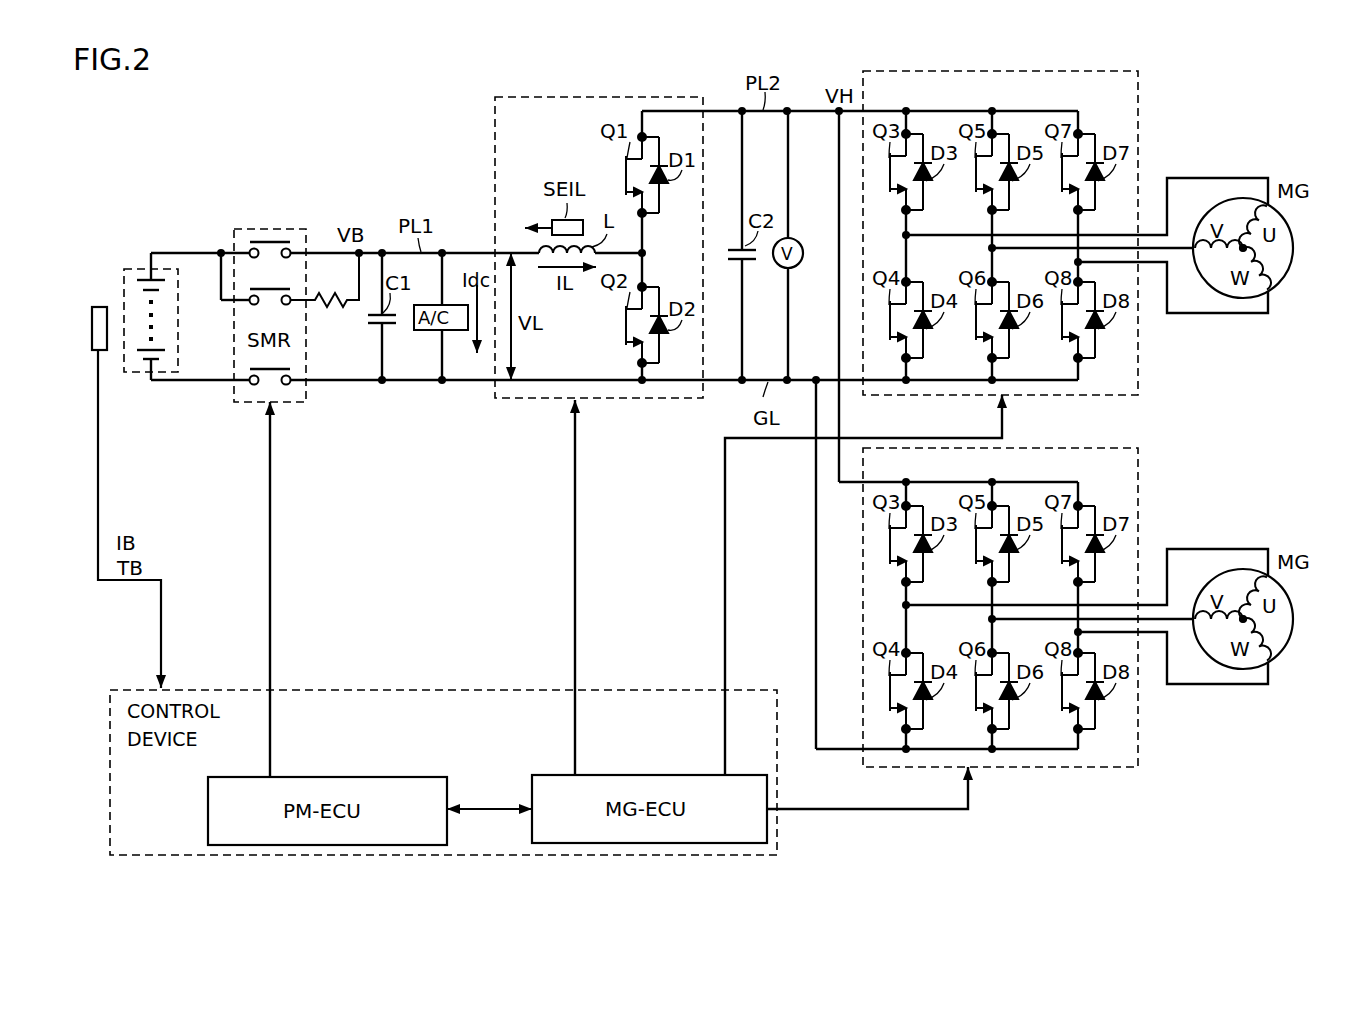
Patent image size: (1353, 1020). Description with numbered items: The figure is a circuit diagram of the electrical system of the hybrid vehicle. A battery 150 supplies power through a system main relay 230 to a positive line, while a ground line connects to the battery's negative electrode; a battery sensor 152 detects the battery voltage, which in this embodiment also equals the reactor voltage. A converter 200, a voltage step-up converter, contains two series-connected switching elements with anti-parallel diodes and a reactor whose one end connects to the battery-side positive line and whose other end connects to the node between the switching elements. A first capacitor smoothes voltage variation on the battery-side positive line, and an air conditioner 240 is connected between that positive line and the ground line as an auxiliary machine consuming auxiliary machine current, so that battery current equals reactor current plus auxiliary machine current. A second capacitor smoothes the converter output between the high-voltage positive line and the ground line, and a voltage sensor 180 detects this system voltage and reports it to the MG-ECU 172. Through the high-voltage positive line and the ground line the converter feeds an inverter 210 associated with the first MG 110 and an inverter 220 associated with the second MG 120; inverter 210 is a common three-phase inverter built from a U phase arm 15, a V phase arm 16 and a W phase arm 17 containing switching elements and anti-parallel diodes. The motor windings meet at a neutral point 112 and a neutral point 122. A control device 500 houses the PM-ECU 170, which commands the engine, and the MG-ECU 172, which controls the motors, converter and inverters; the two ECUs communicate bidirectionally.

The U phase arm 15 is at (918, 103).
The V phase arm 16 is at (1004, 103).
The W phase arm 17 is at (1090, 103).
The first MG 110 is at (1280, 284).
The neutral point 112 is at (1243, 245).
The second MG 120 is at (1280, 655).
The neutral point 122 is at (1243, 616).
The battery 150 is at (134, 268).
The battery sensor 152 is at (98, 307).
The PM-ECU 170 is at (388, 777).
The MG-ECU 172 is at (647, 775).
The voltage sensor 180 is at (803, 248).
The converter 200 is at (657, 97).
The inverter 210 is at (1088, 70).
The inverter 220 is at (1087, 446).
The SMR 230 is at (272, 228).
The air conditioner 240 is at (428, 332).
The control device 500 is at (441, 747).